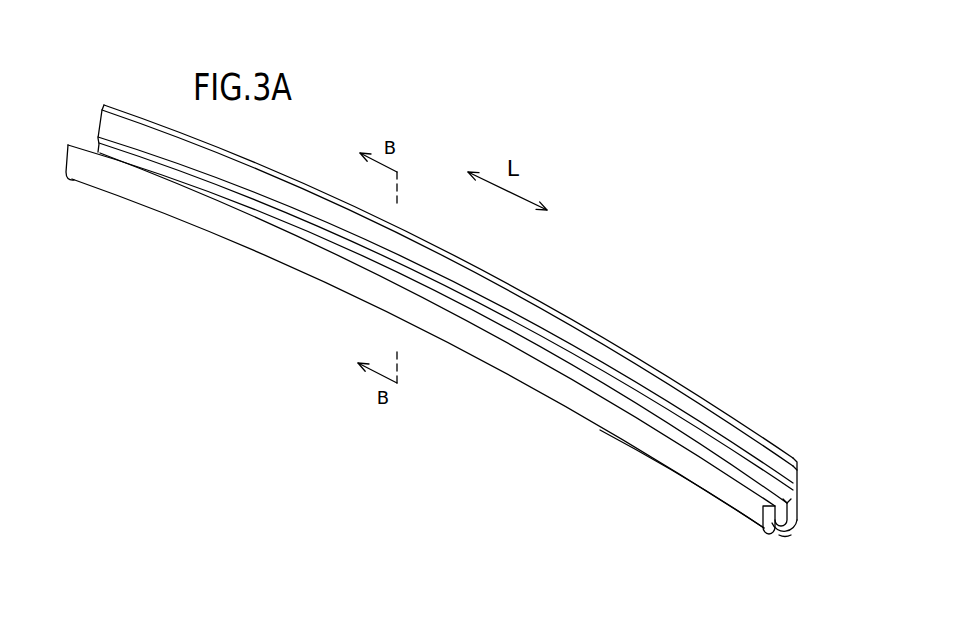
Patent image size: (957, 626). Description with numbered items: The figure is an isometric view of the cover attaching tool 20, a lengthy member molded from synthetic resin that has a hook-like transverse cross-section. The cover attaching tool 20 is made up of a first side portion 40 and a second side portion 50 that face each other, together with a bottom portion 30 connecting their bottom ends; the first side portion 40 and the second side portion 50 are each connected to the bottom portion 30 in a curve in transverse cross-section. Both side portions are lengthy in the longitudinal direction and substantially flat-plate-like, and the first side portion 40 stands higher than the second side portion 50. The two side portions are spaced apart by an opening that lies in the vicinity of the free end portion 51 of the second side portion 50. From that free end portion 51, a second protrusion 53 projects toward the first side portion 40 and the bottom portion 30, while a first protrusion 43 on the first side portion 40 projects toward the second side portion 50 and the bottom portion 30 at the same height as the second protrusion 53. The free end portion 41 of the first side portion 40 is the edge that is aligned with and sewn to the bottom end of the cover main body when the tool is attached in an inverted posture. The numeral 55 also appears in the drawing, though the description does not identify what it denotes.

The cover attaching tool 20 is at (557, 306).
The bottom portion 30 is at (786, 537).
The first side portion 40 is at (708, 417).
The free end portion 41 is at (758, 442).
The first protrusion 43 is at (793, 527).
The second side portion 50 is at (693, 470).
The free end portion 51 is at (750, 492).
The second protrusion 53 is at (773, 512).
The seal lip 55 is at (662, 455).